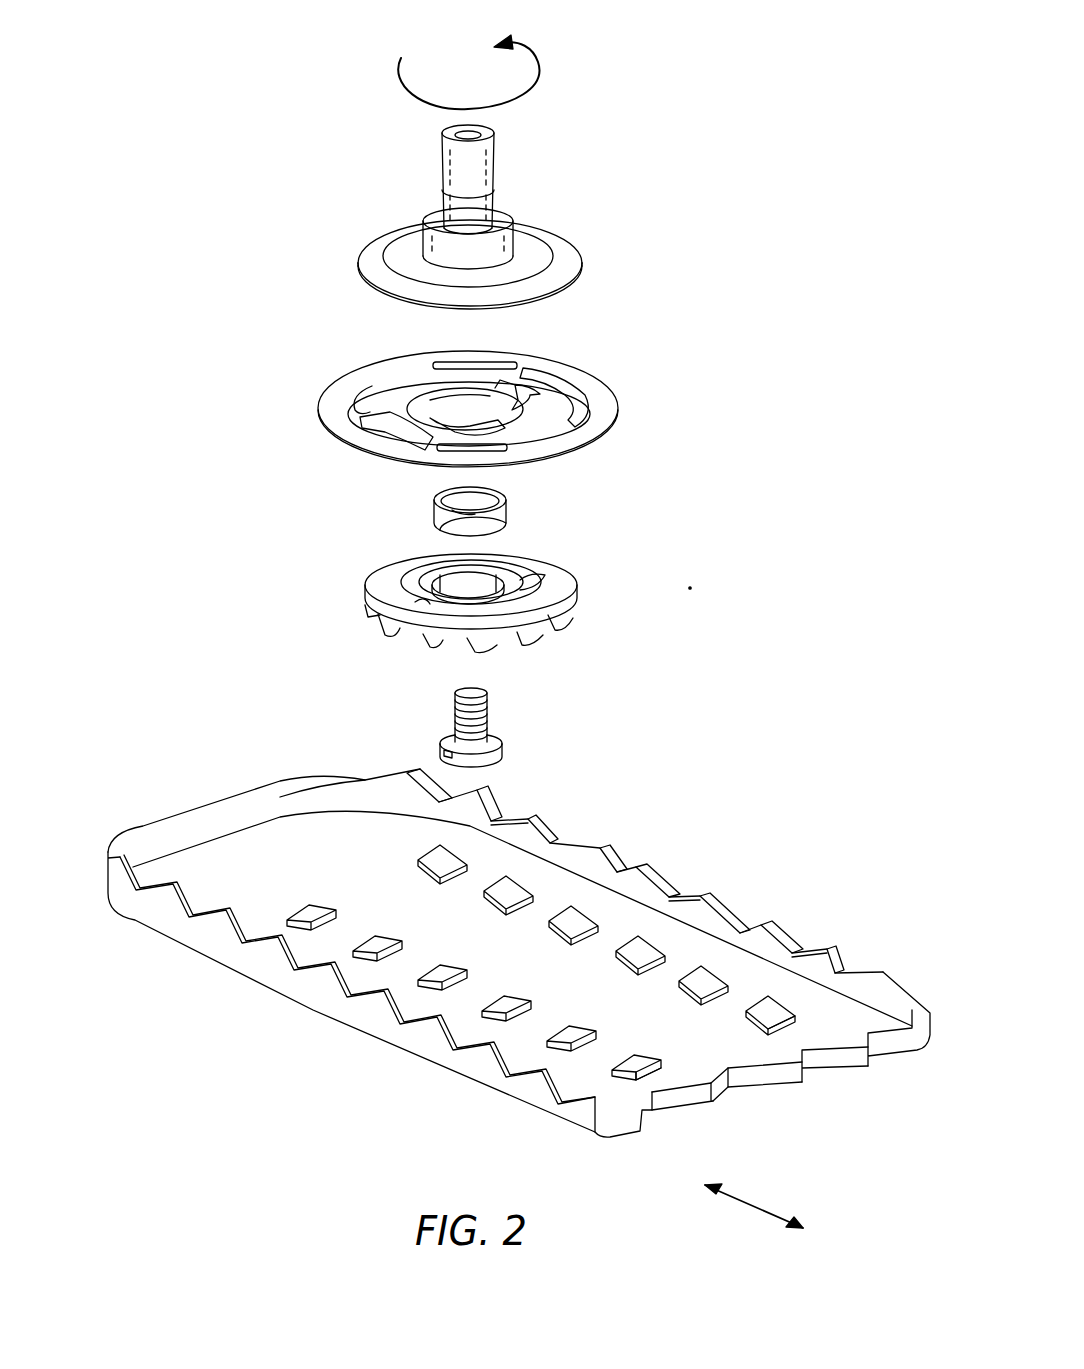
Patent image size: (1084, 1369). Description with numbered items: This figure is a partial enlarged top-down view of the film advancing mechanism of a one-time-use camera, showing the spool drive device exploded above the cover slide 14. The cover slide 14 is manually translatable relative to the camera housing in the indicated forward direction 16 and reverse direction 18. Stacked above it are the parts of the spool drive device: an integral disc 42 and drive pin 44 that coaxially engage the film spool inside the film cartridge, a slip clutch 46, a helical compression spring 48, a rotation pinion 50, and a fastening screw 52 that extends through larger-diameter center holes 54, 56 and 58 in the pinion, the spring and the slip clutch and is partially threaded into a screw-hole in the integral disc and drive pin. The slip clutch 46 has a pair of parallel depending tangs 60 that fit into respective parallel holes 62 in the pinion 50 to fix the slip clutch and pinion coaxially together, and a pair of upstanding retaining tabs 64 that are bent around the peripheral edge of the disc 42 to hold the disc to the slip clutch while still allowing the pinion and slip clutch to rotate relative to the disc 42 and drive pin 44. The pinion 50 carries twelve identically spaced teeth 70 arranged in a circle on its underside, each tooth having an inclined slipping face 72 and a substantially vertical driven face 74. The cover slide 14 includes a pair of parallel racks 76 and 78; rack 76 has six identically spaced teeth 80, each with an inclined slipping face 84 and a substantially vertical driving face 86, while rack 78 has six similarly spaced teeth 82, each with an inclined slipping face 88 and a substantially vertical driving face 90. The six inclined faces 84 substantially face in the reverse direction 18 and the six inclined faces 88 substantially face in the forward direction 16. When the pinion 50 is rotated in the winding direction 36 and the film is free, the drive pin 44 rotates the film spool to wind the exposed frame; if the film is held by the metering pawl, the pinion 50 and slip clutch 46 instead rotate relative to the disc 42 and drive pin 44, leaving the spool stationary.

The cover slide 14 is at (179, 807).
The forward direction 16 is at (718, 1188).
The reverse direction 18 is at (795, 1222).
The winding direction 36 is at (503, 43).
The integral disc 42 is at (585, 256).
The drive pin 44 is at (500, 156).
The slip clutch 46 is at (490, 403).
The helical compression spring 48 is at (476, 507).
The rotation pinion 50 is at (481, 609).
The fastening screw 52 is at (490, 716).
The center hole 54 is at (462, 590).
The center hole 56 is at (458, 512).
The center hole 58 is at (443, 398).
The depending tangs 60 is at (498, 385).
The parallel holes 62 is at (420, 605).
The retaining tabs 64 is at (560, 372).
The teeth 70 is at (380, 628).
The inclined slipping face 72 is at (490, 645).
The driven face 74 is at (468, 645).
The rack 76 is at (484, 846).
The rack 78 is at (358, 970).
The teeth 80 is at (575, 912).
The teeth 82 is at (553, 1053).
The inclined slipping face 84 is at (777, 1005).
The driving face 86 is at (758, 1010).
The inclined slipping face 88 is at (637, 1060).
The driving face 90 is at (650, 1070).